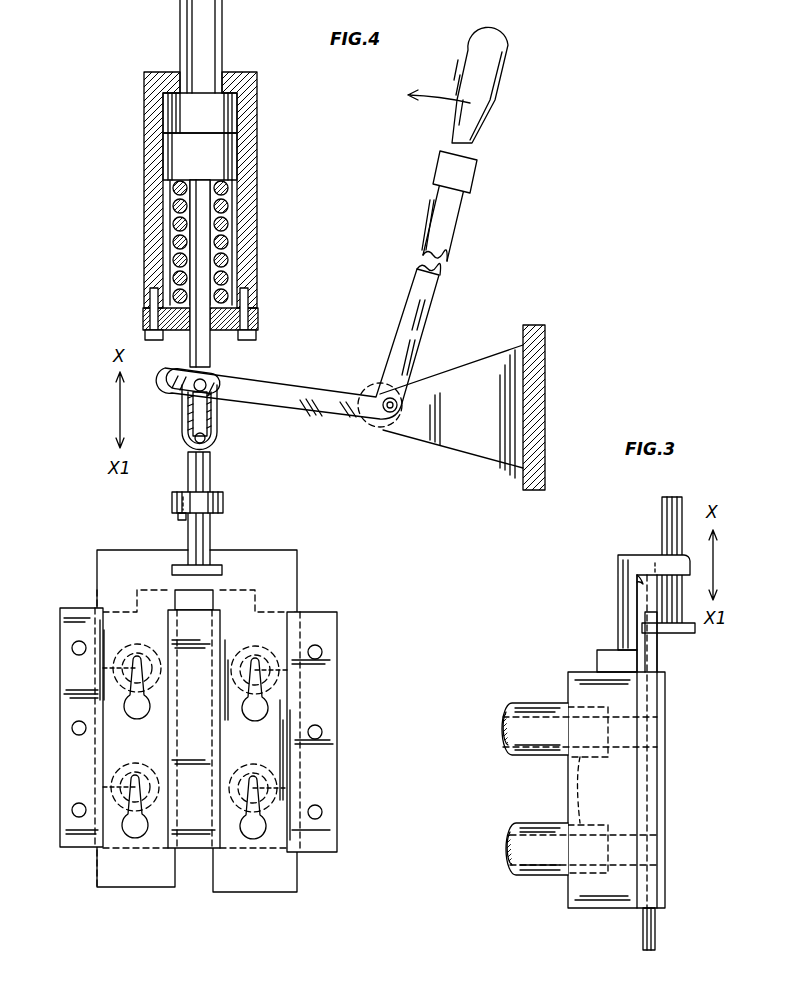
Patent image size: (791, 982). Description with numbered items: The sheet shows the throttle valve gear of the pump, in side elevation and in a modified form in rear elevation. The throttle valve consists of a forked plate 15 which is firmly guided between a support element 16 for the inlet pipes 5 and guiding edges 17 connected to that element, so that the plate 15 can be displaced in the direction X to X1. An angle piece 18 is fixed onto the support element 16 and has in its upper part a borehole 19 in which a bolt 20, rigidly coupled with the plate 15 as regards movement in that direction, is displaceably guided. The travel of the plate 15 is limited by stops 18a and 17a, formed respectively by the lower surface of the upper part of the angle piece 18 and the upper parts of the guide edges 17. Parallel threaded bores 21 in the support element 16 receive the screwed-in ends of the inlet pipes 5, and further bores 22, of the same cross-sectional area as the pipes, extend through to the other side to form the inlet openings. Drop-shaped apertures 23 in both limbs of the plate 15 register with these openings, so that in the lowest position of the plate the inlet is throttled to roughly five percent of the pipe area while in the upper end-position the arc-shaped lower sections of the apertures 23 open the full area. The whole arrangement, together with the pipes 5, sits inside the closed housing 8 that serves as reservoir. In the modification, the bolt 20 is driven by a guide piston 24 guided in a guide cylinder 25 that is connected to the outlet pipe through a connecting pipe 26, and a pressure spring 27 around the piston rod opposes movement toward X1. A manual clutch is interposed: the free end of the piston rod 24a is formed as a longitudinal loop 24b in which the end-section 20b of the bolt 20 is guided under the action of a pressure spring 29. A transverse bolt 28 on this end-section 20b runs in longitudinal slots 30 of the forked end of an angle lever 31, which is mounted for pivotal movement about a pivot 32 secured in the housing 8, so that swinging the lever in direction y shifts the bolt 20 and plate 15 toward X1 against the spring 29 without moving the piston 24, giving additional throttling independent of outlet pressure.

In FIG. 3, the inlet pipe 5 is at (530, 712).
In FIG. 4, the closed housing 8 is at (538, 341).
In FIG. 4, the forked plate 15 is at (285, 591).
In FIG. 3, the forked plate 15 is at (656, 925).
In FIG. 3, the support element 16 is at (597, 656).
In FIG. 4, the guiding edge 17 is at (70, 756).
In FIG. 4, the stop 17a is at (215, 593).
In FIG. 3, the stop 17a is at (665, 672).
In FIG. 4, the angle piece 18 is at (224, 503).
In FIG. 3, the angle piece 18 is at (630, 560).
In FIG. 4, the stop 18a is at (183, 518).
In FIG. 3, the stop 18a is at (638, 580).
In FIG. 4, the borehole 19 is at (178, 498).
In FIG. 3, the borehole 19 is at (655, 570).
In FIG. 4, the bolt 20 is at (210, 475).
In FIG. 3, the bolt 20 is at (662, 503).
In FIG. 4, the end-section of the bolt 20b is at (208, 428).
In FIG. 4, the threaded bore 21 is at (112, 660).
In FIG. 3, the threaded bore 21 is at (580, 823).
In FIG. 4, the bore 22 is at (110, 676).
In FIG. 3, the bore 22 is at (625, 740).
In FIG. 4, the drop-shaped aperture 23 is at (262, 712).
In FIG. 3, the drop-shaped aperture 23 is at (660, 717).
In FIG. 4, the guide piston 24 is at (225, 157).
In FIG. 4, the piston rod 24a is at (166, 226).
In FIG. 4, the loop 24b is at (188, 432).
In FIG. 4, the guide cylinder 25 is at (247, 100).
In FIG. 4, the connecting pipe 26 is at (205, 37).
In FIG. 4, the pressure spring 27 is at (235, 228).
In FIG. 4, the transverse bolt 28 is at (215, 385).
In FIG. 4, the pressure spring 29 is at (188, 408).
In FIG. 4, the longitudinal slot 30 is at (180, 378).
In FIG. 4, the angle lever 31 is at (447, 257).
In FIG. 4, the pivot 32 is at (390, 412).